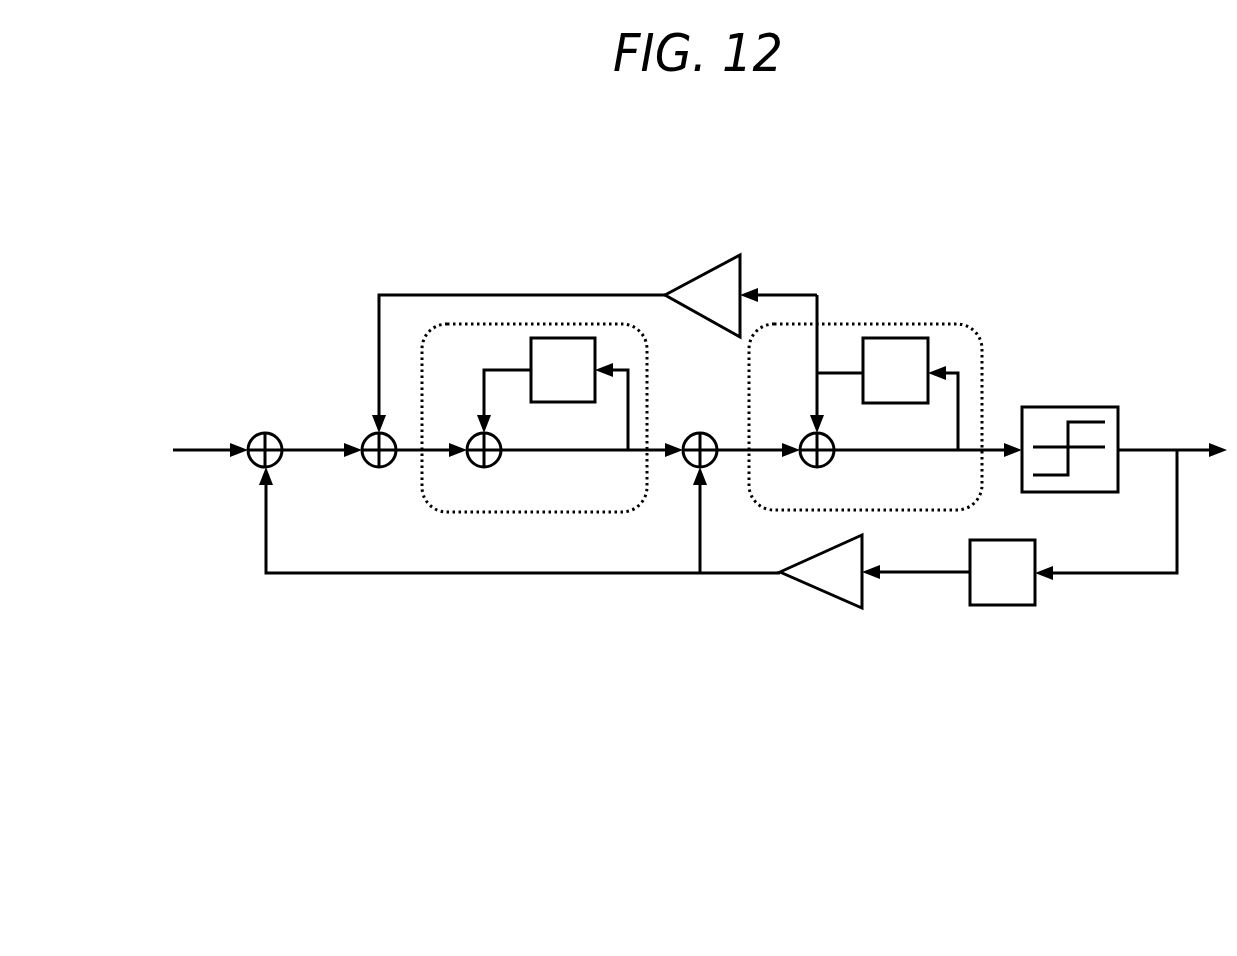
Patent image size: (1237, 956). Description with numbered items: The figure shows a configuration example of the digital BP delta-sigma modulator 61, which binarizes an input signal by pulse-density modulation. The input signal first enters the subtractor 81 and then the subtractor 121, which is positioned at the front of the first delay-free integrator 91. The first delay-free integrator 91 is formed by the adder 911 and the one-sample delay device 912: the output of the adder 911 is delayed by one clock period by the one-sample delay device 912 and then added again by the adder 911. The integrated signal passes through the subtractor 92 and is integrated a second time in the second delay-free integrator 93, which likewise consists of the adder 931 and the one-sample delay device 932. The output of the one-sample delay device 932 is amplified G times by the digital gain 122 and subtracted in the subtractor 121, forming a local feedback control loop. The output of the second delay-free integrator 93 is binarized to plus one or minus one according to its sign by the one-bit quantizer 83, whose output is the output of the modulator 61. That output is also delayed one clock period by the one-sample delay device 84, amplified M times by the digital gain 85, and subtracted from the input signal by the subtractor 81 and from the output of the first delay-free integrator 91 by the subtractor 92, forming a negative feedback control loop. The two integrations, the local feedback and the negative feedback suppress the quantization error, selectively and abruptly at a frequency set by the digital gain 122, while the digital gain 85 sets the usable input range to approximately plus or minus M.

The digital BP delta-sigma modulator 61 is at (855, 176).
The subtractor 81 is at (266, 433).
The subtractor 121 is at (372, 433).
The first delay-free integrator 91 is at (523, 324).
The one-sample delay device 912 is at (531, 352).
The adder 911 is at (500, 437).
The subtractor 92 is at (700, 433).
The second delay-free integrator 93 is at (868, 324).
The one-sample delay device 932 is at (863, 352).
The adder 931 is at (834, 437).
The digital gain 122 is at (705, 265).
The one-bit quantizer 83 is at (1068, 407).
The one-sample delay device 84 is at (1003, 605).
The digital gain 85 is at (823, 597).